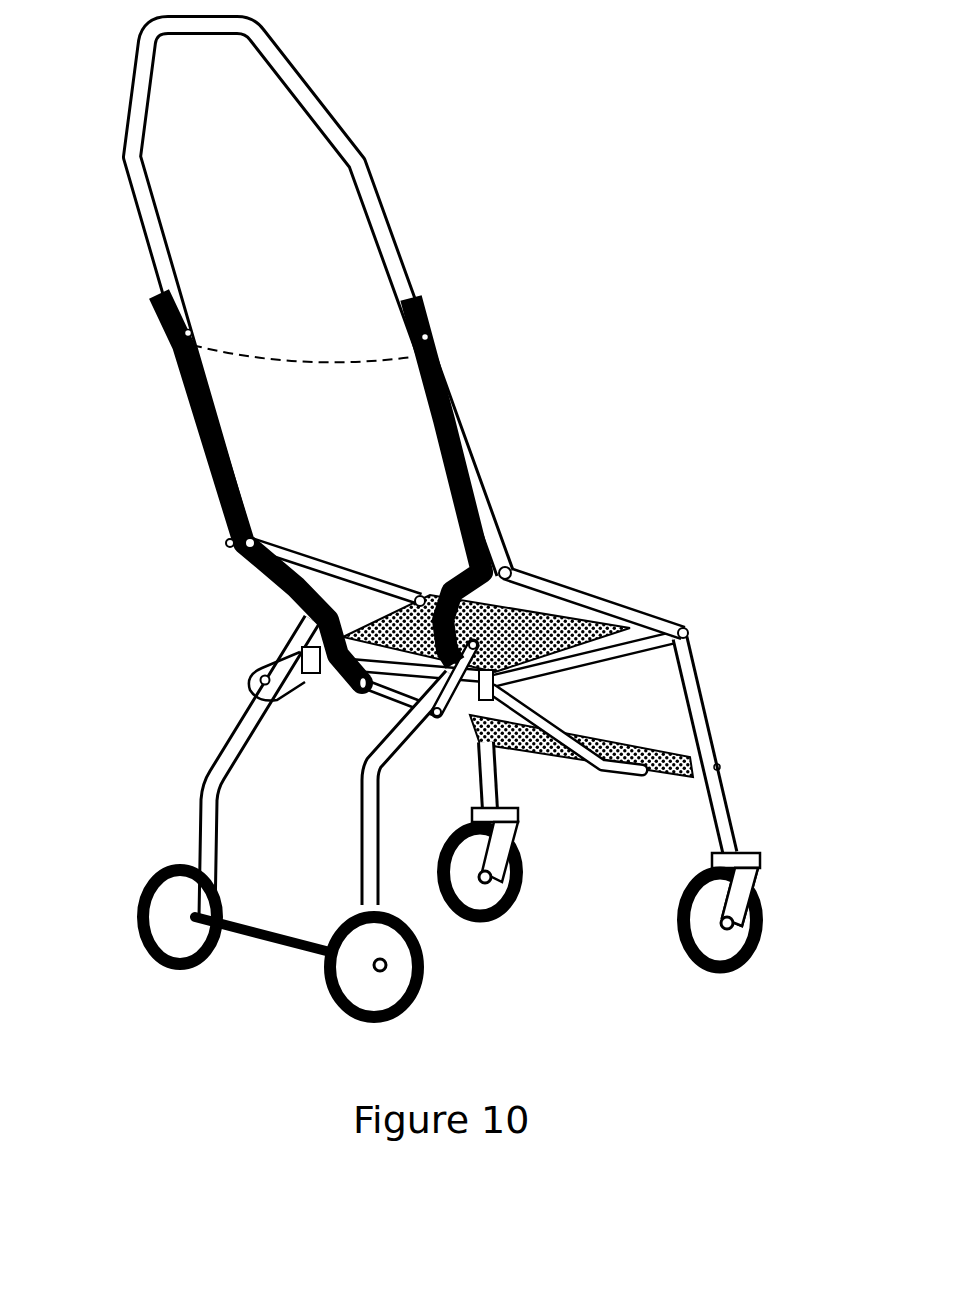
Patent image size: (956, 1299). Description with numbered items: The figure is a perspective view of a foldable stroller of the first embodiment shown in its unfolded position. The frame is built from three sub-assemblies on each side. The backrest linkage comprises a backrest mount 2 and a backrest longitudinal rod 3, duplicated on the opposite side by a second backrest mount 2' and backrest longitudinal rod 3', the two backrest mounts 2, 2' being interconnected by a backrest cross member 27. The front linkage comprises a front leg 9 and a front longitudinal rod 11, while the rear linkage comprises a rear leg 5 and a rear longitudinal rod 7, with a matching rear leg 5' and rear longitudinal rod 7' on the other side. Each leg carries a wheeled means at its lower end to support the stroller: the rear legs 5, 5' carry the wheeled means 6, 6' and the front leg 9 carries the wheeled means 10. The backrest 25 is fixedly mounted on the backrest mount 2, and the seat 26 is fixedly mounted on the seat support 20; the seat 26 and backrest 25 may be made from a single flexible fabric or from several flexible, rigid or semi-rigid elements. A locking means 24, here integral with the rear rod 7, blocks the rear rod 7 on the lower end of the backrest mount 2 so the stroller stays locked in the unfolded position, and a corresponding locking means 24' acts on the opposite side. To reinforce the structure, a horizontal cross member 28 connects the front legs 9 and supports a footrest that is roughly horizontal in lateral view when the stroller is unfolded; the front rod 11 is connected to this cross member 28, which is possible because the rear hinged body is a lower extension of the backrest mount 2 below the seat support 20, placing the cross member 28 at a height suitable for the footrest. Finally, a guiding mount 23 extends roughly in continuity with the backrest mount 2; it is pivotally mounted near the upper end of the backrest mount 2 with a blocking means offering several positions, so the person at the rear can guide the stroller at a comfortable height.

The guiding mount 23 is at (387, 223).
The backrest 25 is at (285, 357).
The backrest mount 2 is at (508, 480).
The backrest mount 2' is at (205, 494).
The backrest longitudinal rod 3 is at (596, 557).
The backrest longitudinal rod 3' is at (335, 530).
The seat 26 is at (417, 597).
The seat support 20 is at (630, 627).
The front leg 9 is at (710, 713).
The front longitudinal rod 11 is at (560, 727).
The locking means 24 is at (537, 749).
The locking means 24' is at (219, 697).
The backrest cross member 27 is at (407, 697).
The rear longitudinal rod 7 is at (465, 778).
The rear longitudinal rod 7' is at (219, 633).
The rear leg 5 is at (355, 790).
The rear leg 5' is at (198, 768).
The wheeled means 6 is at (429, 967).
The wheeled means 6' is at (123, 917).
The wheeled means 10 is at (763, 912).
The horizontal cross member 28 is at (650, 775).